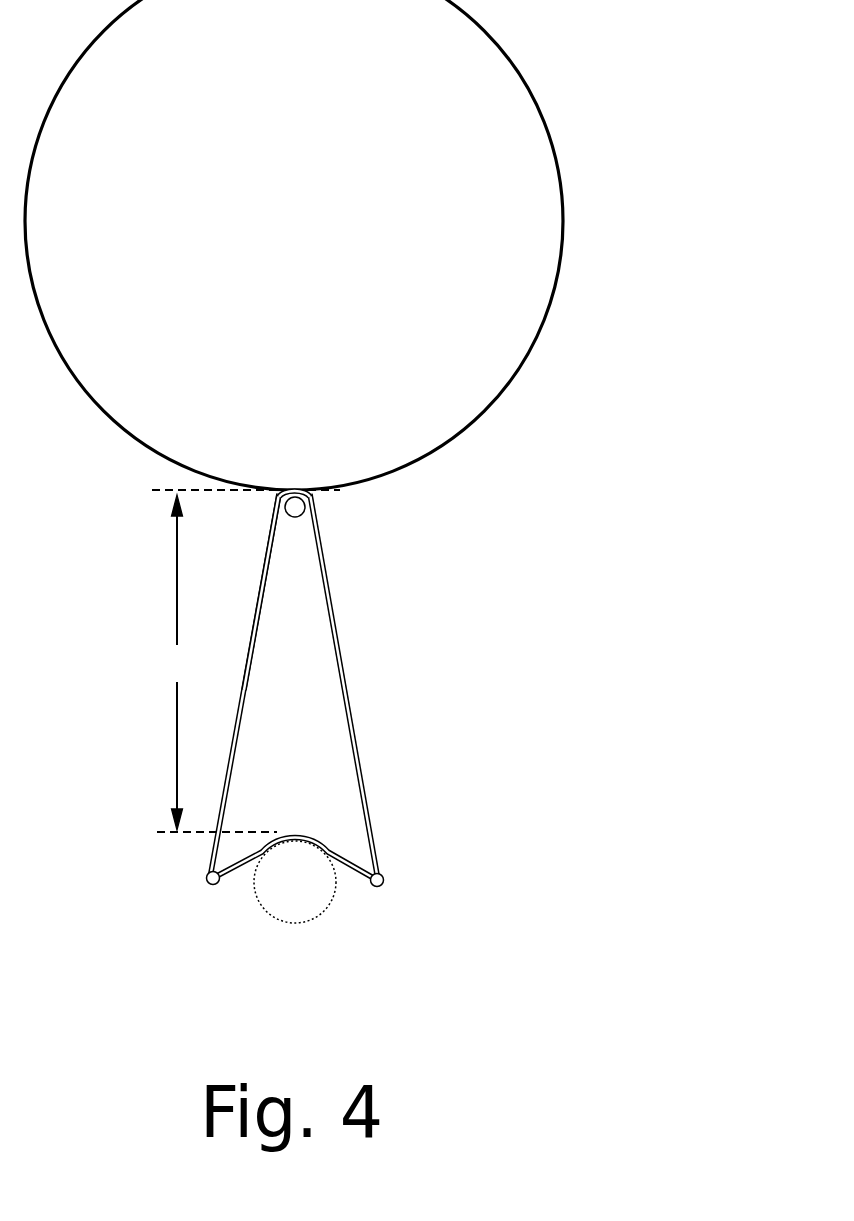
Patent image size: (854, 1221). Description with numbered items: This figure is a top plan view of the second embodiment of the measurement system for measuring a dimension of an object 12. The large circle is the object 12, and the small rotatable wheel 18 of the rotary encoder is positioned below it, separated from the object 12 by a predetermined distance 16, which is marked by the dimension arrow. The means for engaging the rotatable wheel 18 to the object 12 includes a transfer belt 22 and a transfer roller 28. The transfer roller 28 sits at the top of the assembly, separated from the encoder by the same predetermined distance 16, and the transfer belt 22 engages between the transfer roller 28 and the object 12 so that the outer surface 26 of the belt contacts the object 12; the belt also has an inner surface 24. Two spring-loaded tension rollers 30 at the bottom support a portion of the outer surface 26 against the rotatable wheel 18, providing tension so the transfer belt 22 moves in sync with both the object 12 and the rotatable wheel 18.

The object 12 is at (314, 244).
The predetermined distance 16 is at (246, 661).
The rotatable wheel 18 is at (309, 895).
The transfer belt 22 is at (369, 764).
The inner surface 24 is at (253, 657).
The outer surface 26 is at (256, 619).
The transfer roller 28 is at (297, 515).
The tension rollers 30 is at (210, 885).